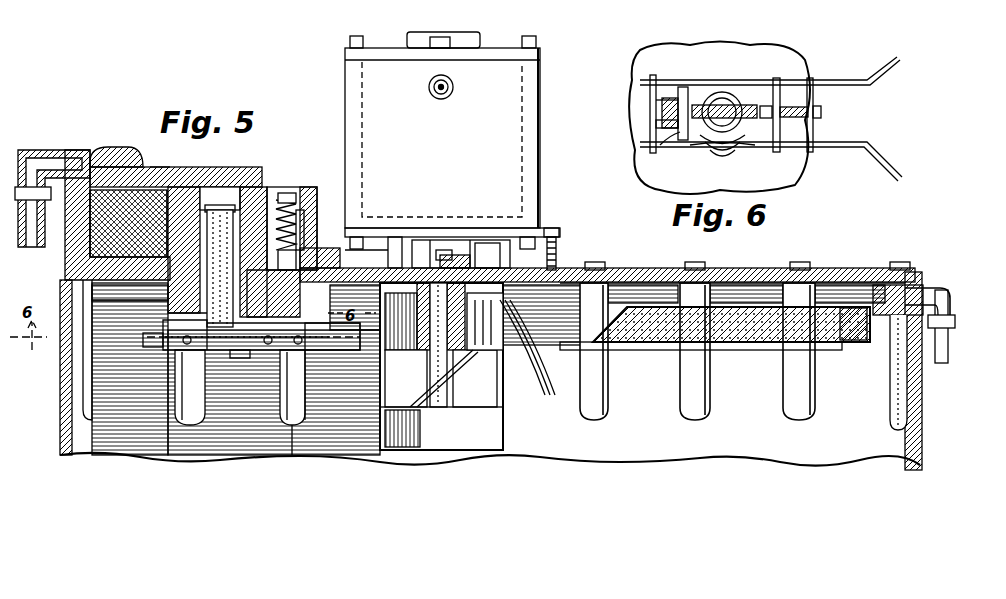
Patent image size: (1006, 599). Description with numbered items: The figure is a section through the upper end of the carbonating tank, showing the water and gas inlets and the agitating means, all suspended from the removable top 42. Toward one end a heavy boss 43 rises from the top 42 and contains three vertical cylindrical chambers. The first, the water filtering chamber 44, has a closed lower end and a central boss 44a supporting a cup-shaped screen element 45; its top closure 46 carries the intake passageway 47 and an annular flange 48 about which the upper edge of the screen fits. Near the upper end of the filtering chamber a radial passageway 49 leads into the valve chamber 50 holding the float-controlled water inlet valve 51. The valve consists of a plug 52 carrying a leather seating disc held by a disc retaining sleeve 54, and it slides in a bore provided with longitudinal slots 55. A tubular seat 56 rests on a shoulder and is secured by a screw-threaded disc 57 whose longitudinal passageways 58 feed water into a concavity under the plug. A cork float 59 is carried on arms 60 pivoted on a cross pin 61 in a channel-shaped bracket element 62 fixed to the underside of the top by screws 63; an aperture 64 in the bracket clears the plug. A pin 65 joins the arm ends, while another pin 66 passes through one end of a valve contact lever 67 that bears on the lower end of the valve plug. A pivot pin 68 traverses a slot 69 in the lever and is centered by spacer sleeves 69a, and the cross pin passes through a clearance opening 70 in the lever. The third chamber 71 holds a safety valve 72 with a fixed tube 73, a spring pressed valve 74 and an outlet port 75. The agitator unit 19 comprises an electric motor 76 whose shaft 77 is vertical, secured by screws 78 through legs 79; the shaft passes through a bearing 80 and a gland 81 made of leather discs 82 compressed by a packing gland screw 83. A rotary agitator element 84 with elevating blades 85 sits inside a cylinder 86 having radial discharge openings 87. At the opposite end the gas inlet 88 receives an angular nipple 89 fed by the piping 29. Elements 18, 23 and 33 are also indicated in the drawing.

In FIG. 5, the bolt 18 is at (558, 252).
In FIG. 5, the agitator unit 19 is at (550, 131).
In FIG. 5, the frame member 23 is at (638, 270).
In FIG. 5, the piping 29 is at (945, 365).
In FIG. 5, the channel 33 is at (168, 296).
In FIG. 5, the removable top 42 is at (726, 268).
In FIG. 5, the boss 43 is at (70, 243).
In FIG. 5, the water filtering chamber 44 is at (68, 273).
In FIG. 5, the central boss 44a is at (160, 262).
In FIG. 5, the cup-shaped screen element 45 is at (128, 223).
In FIG. 5, the top closure 46 is at (185, 175).
In FIG. 5, the intake passageway 47 is at (124, 150).
In FIG. 5, the annular flange 48 is at (160, 167).
In FIG. 5, the radial passageway 49 is at (214, 185).
In FIG. 5, the valve chamber 50 is at (228, 183).
In FIG. 5, the water inlet valve 51 is at (217, 327).
In FIG. 6, the water inlet valve 51 is at (730, 80).
In FIG. 5, the plug 52 is at (238, 358).
In FIG. 5, the disc retaining sleeve 54 is at (372, 205).
In FIG. 5, the longitudinal slots 55 is at (268, 350).
In FIG. 6, the longitudinal slots 55 is at (750, 105).
In FIG. 5, the seat 56 is at (285, 187).
In FIG. 5, the screw-threaded disc 57 is at (252, 182).
In FIG. 5, the longitudinal passageways 58 is at (168, 205).
In FIG. 5, the cork float 59 is at (748, 307).
In FIG. 5, the arms 60 is at (562, 350).
In FIG. 6, the arms 60 is at (878, 82).
In FIG. 5, the cross pin 61 is at (305, 380).
In FIG. 6, the cross pin 61 is at (778, 85).
In FIG. 5, the channel-shaped bracket element 62 is at (150, 350).
In FIG. 6, the channel-shaped bracket element 62 is at (668, 150).
In FIG. 5, the screws 63 is at (112, 337).
In FIG. 6, the screws 63 is at (665, 122).
In FIG. 6, the aperture 64 is at (700, 152).
In FIG. 5, the pin 65 is at (132, 343).
In FIG. 6, the pin 65 is at (650, 102).
In FIG. 5, the pin 66 is at (425, 345).
In FIG. 6, the pin 66 is at (815, 92).
In FIG. 5, the valve contact lever 67 is at (325, 385).
In FIG. 6, the valve contact lever 67 is at (822, 115).
In FIG. 5, the pivot pin 68 is at (170, 352).
In FIG. 6, the pivot pin 68 is at (716, 95).
In FIG. 5, the slot 69 is at (177, 362).
In FIG. 6, the slot 69 is at (662, 112).
In FIG. 6, the spacer sleeves 69a is at (670, 98).
In FIG. 5, the clearance opening 70 is at (298, 415).
In FIG. 6, the clearance opening 70 is at (812, 80).
In FIG. 5, the third chamber 71 is at (318, 197).
In FIG. 5, the safety valve 72 is at (312, 213).
In FIG. 5, the fixed tube 73 is at (308, 232).
In FIG. 5, the spring pressed valve 74 is at (298, 195).
In FIG. 5, the outlet port 75 is at (350, 240).
In FIG. 5, the electric motor 76 is at (442, 130).
In FIG. 5, the shaft 77 is at (459, 250).
In FIG. 5, the screws 78 is at (396, 240).
In FIG. 5, the legs 79 is at (420, 240).
In FIG. 5, the bearing 80 is at (485, 245).
In FIG. 5, the gland 81 is at (445, 245).
In FIG. 5, the leather discs 82 is at (475, 378).
In FIG. 5, the packing gland screw 83 is at (472, 322).
In FIG. 5, the rotary agitator element 84 is at (449, 418).
In FIG. 5, the elevating blades 85 is at (478, 410).
In FIG. 5, the cylinder 86 is at (503, 422).
In FIG. 5, the radial discharge openings 87 is at (527, 359).
In FIG. 5, the gas inlet 88 is at (949, 338).
In FIG. 5, the angular nipple 89 is at (950, 296).